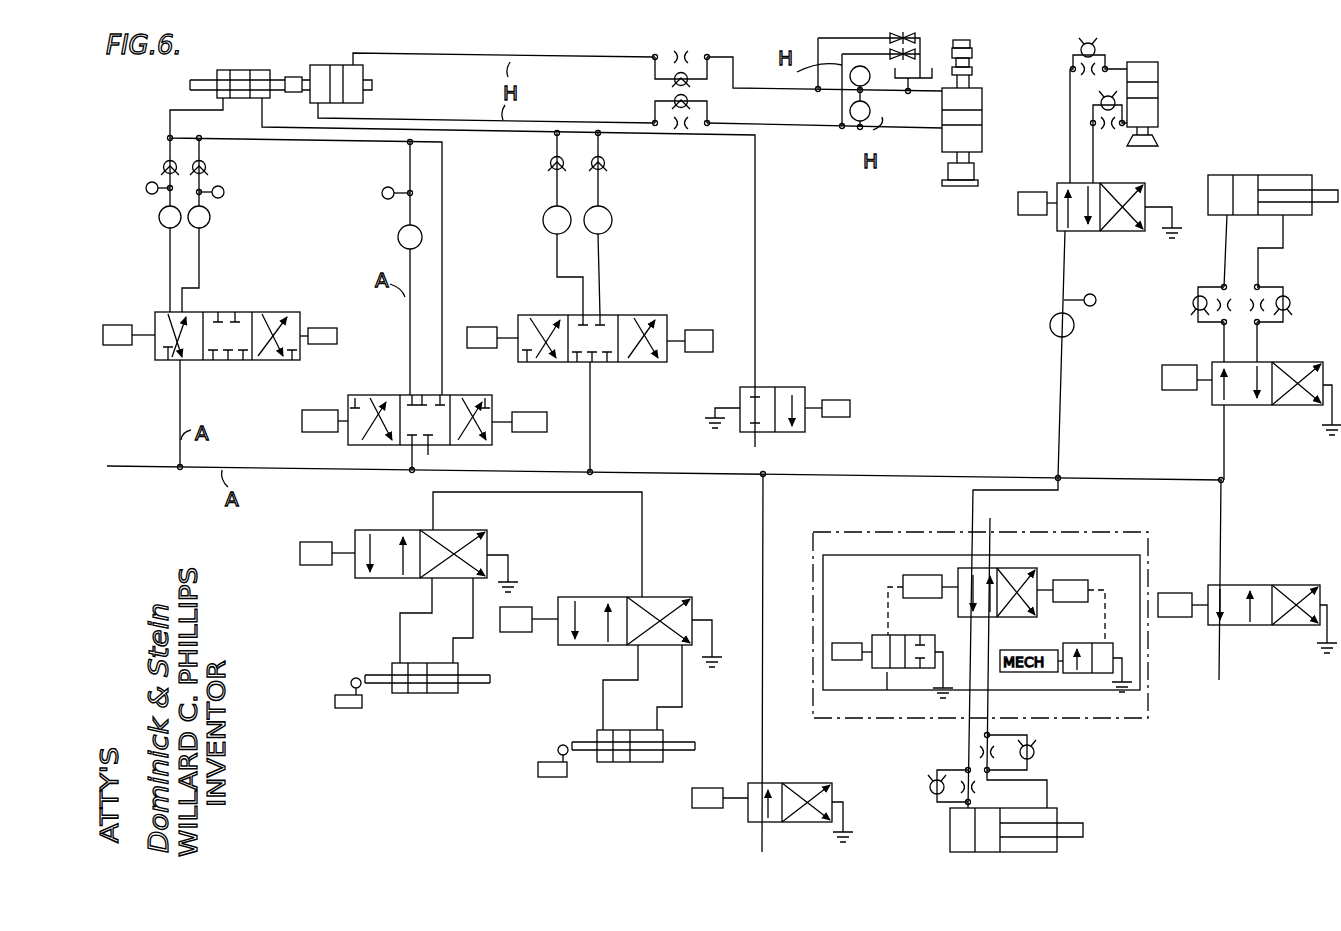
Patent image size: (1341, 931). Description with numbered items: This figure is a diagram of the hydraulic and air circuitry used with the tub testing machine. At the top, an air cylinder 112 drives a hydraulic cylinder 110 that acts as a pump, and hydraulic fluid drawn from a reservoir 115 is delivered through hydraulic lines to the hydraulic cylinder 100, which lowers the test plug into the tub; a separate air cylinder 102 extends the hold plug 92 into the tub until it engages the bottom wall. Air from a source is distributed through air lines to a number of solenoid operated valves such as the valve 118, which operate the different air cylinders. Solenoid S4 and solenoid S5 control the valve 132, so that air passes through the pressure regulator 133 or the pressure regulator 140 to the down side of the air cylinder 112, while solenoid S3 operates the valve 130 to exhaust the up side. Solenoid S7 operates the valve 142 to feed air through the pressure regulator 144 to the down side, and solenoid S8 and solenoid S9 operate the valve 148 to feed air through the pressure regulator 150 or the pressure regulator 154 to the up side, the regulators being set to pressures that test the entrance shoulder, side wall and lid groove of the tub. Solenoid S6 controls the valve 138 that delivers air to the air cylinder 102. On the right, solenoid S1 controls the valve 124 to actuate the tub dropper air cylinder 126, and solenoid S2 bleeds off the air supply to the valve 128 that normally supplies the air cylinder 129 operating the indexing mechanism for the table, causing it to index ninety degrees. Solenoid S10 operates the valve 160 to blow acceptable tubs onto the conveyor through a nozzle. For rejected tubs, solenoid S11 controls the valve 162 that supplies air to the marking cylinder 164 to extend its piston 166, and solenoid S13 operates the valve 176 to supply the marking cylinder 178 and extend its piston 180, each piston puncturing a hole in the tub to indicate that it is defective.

The air cylinder 112 is at (226, 68).
The hydraulic cylinder 110 is at (320, 66).
The reservoir 115 is at (912, 95).
The hydraulic cylinder 100 is at (986, 96).
The air cylinder 102 is at (1163, 70).
The hold plug 92 is at (1162, 143).
The valve 138 is at (1118, 233).
The tub dropper air cylinder 126 is at (1271, 175).
The valve 124 is at (1262, 407).
The pressure regulator 133 is at (158, 230).
The pressure regulator 140 is at (210, 218).
The pressure regulator 144 is at (397, 239).
The pressure regulator 150 is at (546, 226).
The pressure regulator 154 is at (614, 219).
The solenoid operated valve 118 is at (236, 305).
The valve 132 is at (214, 360).
The valve 142 is at (470, 388).
The valve 148 is at (540, 309).
The valve 130 is at (790, 434).
The valve 162 is at (380, 527).
The marking cylinder 164 is at (415, 699).
The piston 166 is at (476, 690).
The valve 176 is at (595, 597).
The marking cylinder 178 is at (606, 767).
The piston 180 is at (683, 758).
The air cylinder 129 is at (1059, 810).
The valve 128 is at (958, 598).
The valve 160 is at (1267, 584).
The solenoid S1 is at (1160, 372).
The solenoid S2 is at (843, 660).
The solenoid S3 is at (840, 398).
The solenoid S4 is at (116, 325).
The solenoid S5 is at (318, 327).
The solenoid S6 is at (1028, 195).
The solenoid S7 is at (525, 412).
The solenoid S8 is at (480, 327).
The solenoid S9 is at (697, 330).
The solenoid S10 is at (1178, 592).
The solenoid S11 is at (312, 540).
The solenoid S13 is at (529, 606).